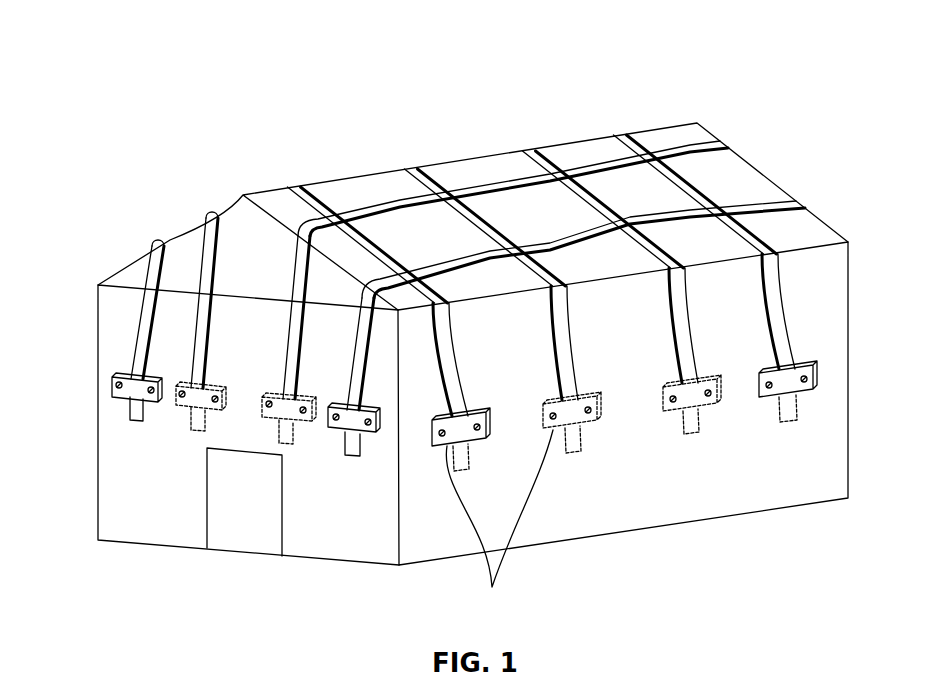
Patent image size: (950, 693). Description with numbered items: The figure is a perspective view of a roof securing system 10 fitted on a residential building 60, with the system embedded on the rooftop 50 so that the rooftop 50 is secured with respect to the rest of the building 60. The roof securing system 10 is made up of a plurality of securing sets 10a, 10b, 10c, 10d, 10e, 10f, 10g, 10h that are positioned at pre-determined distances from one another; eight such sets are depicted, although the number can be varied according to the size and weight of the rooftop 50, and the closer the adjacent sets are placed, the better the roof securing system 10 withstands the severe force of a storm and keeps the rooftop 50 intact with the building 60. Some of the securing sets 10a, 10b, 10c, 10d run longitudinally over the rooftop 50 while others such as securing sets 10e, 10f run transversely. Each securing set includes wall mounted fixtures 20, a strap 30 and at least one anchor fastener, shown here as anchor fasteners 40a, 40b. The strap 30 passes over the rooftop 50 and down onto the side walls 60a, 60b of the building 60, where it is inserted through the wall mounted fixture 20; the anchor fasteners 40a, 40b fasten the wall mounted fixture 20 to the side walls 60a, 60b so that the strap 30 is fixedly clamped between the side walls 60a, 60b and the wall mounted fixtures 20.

The roof securing system 10 is at (138, 52).
The securing set 10a is at (297, 175).
The securing set 10b is at (404, 161).
The securing set 10c is at (522, 144).
The securing set 10d is at (616, 121).
The securing set 10e is at (140, 268).
The securing set 10f is at (196, 230).
The securing set 10g is at (285, 272).
The securing set 10h is at (361, 391).
The wall mounted fixture 20 is at (499, 524).
The strap 30 is at (607, 213).
The anchor fastener 40a is at (671, 402).
The anchor fastener 40b is at (710, 396).
The rooftop 50 is at (813, 227).
The building 60 is at (468, 425).
The side wall 60a is at (97, 440).
The side wall 60b is at (633, 525).